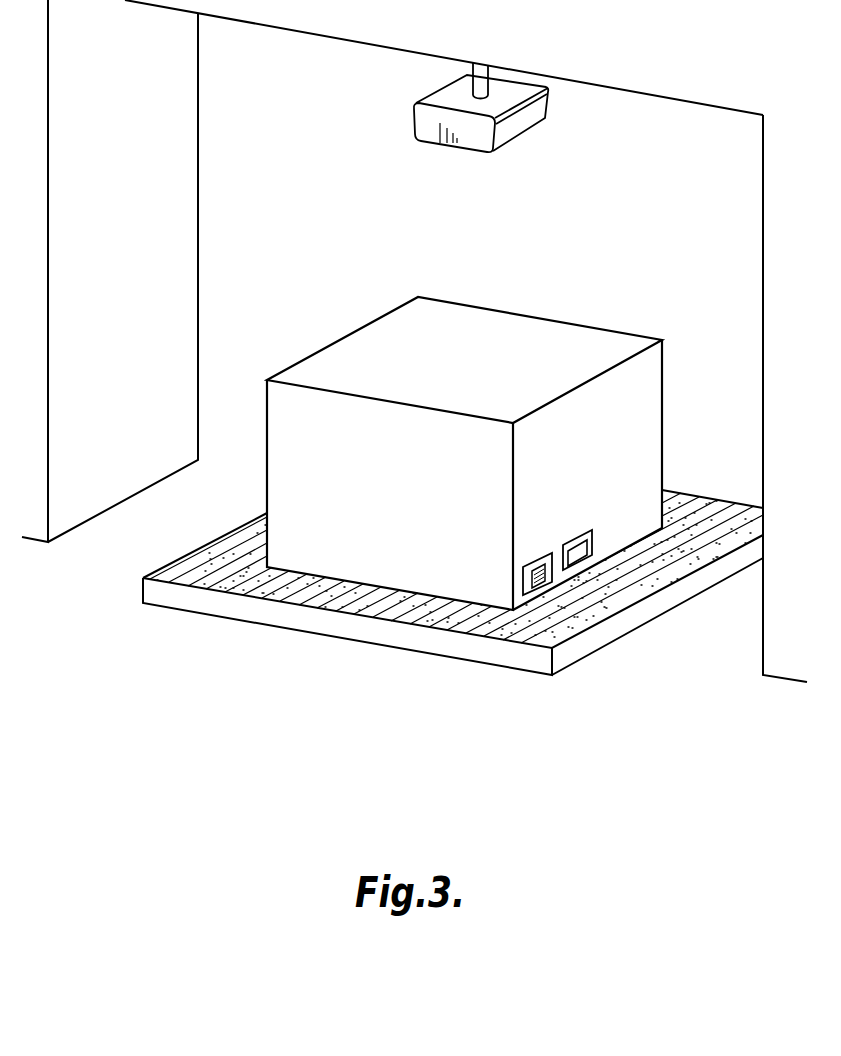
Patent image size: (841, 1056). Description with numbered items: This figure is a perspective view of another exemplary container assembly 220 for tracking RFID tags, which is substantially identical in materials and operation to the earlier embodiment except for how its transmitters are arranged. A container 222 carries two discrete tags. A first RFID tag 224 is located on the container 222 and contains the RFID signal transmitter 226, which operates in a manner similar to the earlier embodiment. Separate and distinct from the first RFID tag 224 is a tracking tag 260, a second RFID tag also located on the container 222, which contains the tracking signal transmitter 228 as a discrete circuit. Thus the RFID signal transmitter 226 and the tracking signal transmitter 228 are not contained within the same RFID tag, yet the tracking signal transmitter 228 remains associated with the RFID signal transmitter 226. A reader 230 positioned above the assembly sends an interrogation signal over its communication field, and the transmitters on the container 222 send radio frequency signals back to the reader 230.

The container assembly 220 is at (588, 748).
The container 222 is at (308, 562).
The RFID tag 224 is at (552, 565).
The RFID signal transmitter 226 is at (538, 586).
The tracking signal transmitter 228 is at (590, 547).
The reader 230 is at (413, 118).
The tracking tag 260 is at (582, 566).